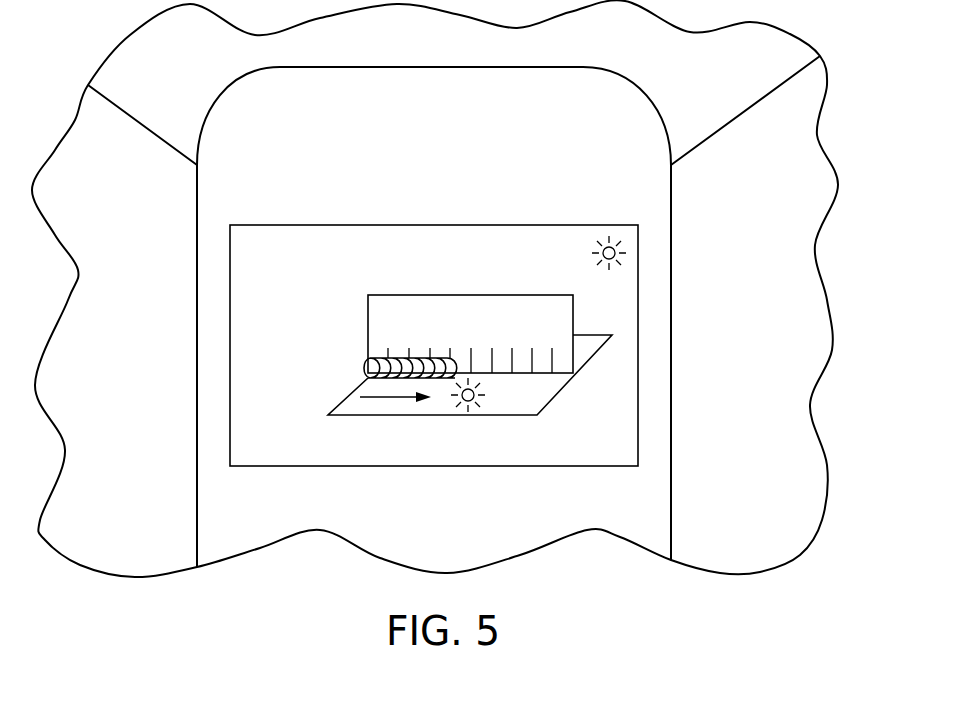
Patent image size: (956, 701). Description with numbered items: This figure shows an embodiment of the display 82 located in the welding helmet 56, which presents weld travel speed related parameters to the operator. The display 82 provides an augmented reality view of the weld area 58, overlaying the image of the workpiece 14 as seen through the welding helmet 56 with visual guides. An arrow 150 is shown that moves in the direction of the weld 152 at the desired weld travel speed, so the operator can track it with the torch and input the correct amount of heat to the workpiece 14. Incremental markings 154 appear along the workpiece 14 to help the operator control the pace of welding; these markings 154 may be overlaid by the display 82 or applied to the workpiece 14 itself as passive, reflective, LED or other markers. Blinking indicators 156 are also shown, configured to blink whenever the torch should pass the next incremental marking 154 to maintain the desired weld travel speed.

The welding helmet 56 is at (424, 161).
The weld area 58 is at (389, 314).
The display 82 is at (320, 224).
The workpiece 14 is at (427, 295).
The arrow 150 is at (387, 398).
The weld 152 is at (421, 362).
The incremental markings 154 is at (513, 368).
The blinking indicators 156 is at (599, 229).